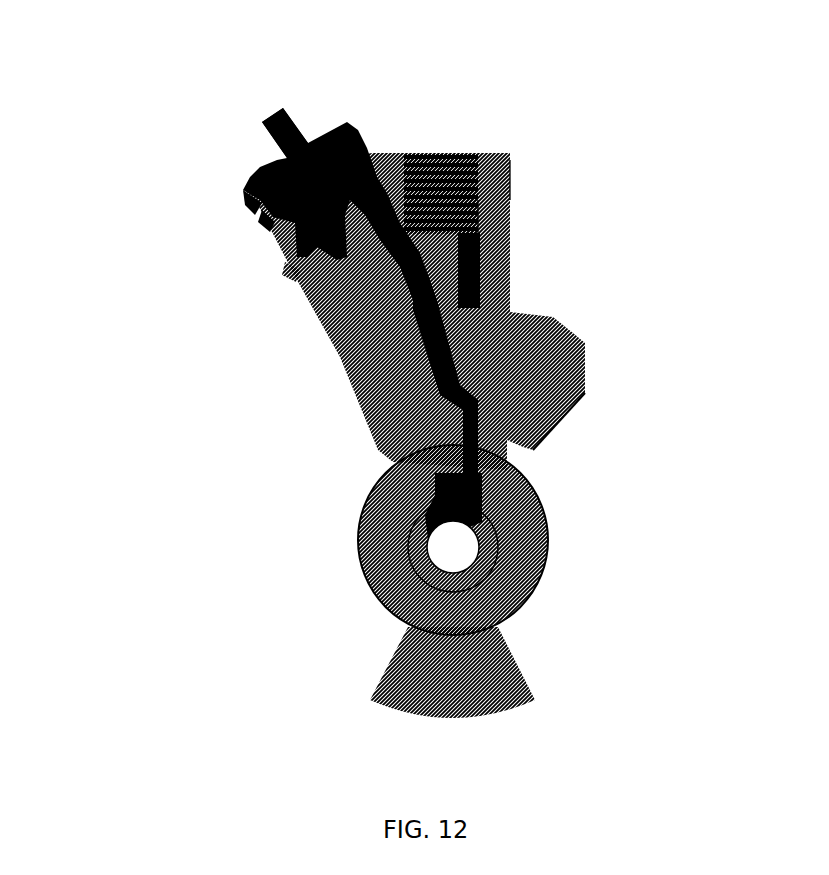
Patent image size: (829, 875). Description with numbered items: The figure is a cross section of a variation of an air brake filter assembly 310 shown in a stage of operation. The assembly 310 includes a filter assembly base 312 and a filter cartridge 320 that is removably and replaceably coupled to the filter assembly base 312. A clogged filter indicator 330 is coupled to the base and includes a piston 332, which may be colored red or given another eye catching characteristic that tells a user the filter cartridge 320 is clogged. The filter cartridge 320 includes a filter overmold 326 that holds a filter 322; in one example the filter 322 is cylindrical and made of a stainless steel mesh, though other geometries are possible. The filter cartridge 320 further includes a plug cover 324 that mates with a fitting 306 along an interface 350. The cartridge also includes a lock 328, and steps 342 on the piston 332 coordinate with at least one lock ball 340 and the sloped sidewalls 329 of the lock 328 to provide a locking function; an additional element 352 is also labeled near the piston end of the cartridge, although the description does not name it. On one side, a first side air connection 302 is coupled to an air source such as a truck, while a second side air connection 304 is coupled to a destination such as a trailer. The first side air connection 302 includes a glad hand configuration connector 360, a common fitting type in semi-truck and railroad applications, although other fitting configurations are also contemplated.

The first side air connection 302 is at (547, 558).
The second side air connection 304 is at (480, 148).
The fitting 306 is at (588, 347).
The air brake filter assembly 310 is at (142, 178).
The filter assembly base 312 is at (366, 140).
The filter cartridge 320 is at (392, 420).
The filter 322 is at (512, 312).
The plug cover 324 is at (581, 398).
The filter overmold 326 is at (512, 258).
The lock 328 is at (512, 183).
The sloped sidewalls 329 is at (512, 224).
The clogged filter indicator 330 is at (250, 93).
The piston 332 is at (303, 133).
The lock ball 340 is at (290, 272).
The steps 342 is at (267, 223).
The interface 350 is at (507, 480).
The retainer 352 is at (258, 206).
The glad hand configuration connector 360 is at (312, 597).